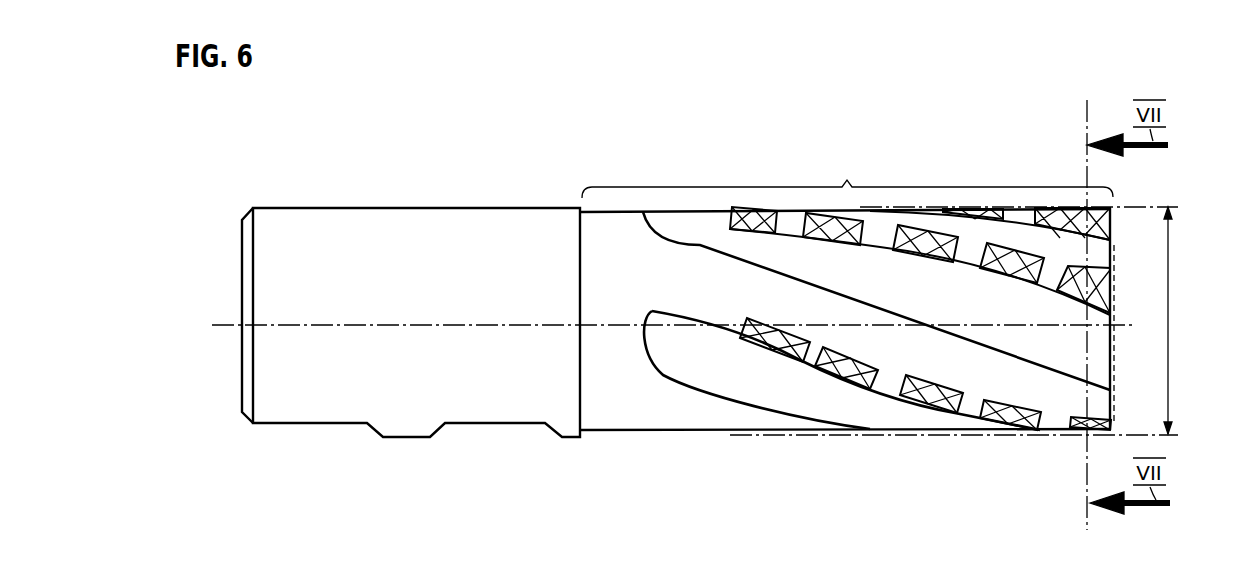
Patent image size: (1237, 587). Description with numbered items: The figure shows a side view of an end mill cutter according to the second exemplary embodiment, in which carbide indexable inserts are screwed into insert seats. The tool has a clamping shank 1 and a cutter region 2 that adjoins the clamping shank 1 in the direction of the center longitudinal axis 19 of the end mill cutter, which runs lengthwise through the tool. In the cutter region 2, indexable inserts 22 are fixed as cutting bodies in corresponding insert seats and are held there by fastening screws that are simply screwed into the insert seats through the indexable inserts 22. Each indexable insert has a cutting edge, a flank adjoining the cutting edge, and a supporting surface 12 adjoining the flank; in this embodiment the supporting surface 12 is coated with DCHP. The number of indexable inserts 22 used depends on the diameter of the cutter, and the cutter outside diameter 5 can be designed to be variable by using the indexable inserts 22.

The clamping shank 1 is at (417, 207).
The cutter region 2 is at (846, 181).
The cutter outside diameter 5 is at (1170, 322).
The supporting surface 12 is at (957, 236).
The center longitudinal axis 19 is at (435, 324).
The indexable inserts 22 is at (990, 208).